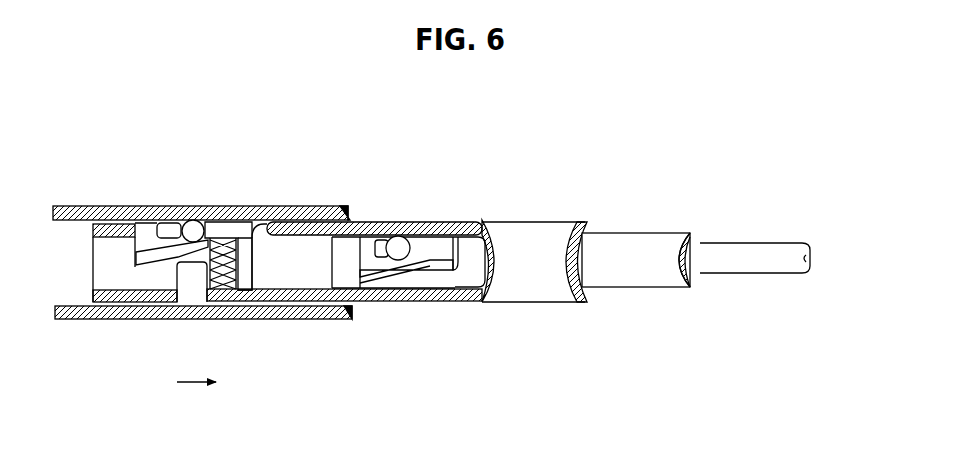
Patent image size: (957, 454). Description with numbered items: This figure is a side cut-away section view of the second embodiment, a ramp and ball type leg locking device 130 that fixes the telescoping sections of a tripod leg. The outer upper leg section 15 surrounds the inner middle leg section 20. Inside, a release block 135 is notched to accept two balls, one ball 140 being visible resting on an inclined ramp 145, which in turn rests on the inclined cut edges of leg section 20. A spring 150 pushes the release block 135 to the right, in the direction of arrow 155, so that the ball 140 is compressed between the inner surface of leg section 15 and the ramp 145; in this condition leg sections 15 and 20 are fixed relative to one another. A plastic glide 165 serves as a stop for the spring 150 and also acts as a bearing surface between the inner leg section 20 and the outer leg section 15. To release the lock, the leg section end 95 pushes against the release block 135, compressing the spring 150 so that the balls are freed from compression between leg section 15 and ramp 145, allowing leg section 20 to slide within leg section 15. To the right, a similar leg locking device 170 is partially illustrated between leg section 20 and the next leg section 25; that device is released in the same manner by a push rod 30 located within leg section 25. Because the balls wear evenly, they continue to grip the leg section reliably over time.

The upper leg section 15 is at (116, 206).
The middle leg section 20 is at (364, 222).
The leg section 25 is at (641, 233).
The push rod 30 is at (758, 243).
The leg section end 95 is at (332, 262).
The ramp and ball type leg locking device 130 is at (254, 148).
The release block 135 is at (247, 240).
The ball 140 is at (198, 222).
The ramp 145 is at (143, 258).
The spring 150 is at (250, 300).
The arrow 155 is at (195, 382).
The plastic glide 165 is at (196, 292).
The leg locking device 170 is at (429, 203).